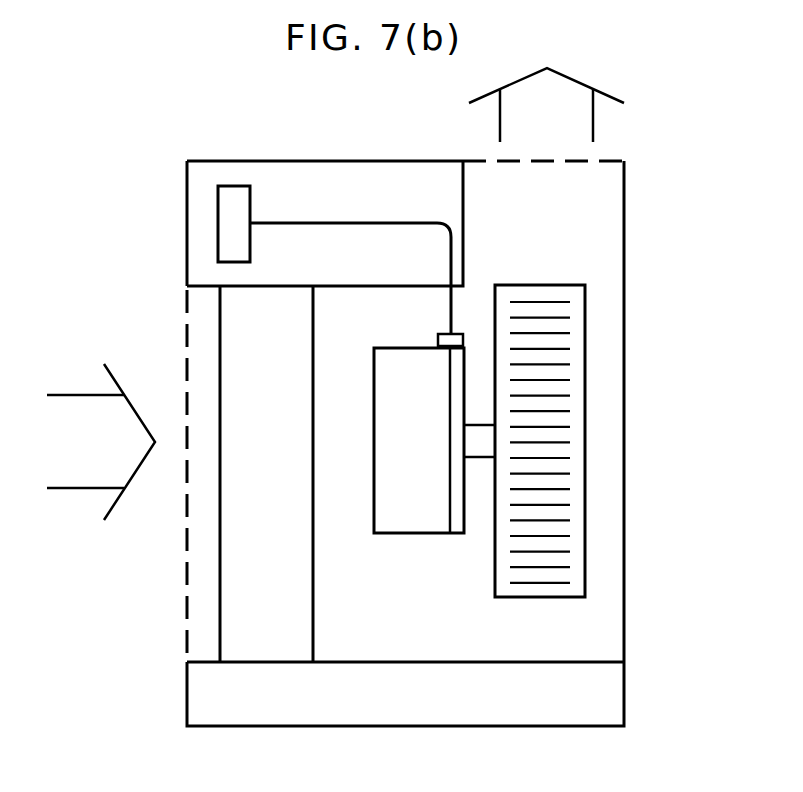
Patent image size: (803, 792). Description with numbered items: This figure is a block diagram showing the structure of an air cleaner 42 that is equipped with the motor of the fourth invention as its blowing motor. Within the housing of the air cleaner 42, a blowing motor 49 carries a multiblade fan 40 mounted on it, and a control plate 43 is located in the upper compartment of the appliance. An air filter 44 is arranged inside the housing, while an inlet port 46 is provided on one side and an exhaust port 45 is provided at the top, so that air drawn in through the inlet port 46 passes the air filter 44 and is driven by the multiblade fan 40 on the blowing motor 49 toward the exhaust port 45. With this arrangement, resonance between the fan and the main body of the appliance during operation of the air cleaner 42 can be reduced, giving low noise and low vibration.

The multiblade fan 40 is at (538, 590).
The air cleaner 42 is at (308, 123).
The control plate 43 is at (223, 211).
The air filter 44 is at (267, 647).
The exhaust port 45 is at (563, 158).
The inlet port 46 is at (187, 487).
The blowing motor 49 is at (430, 526).